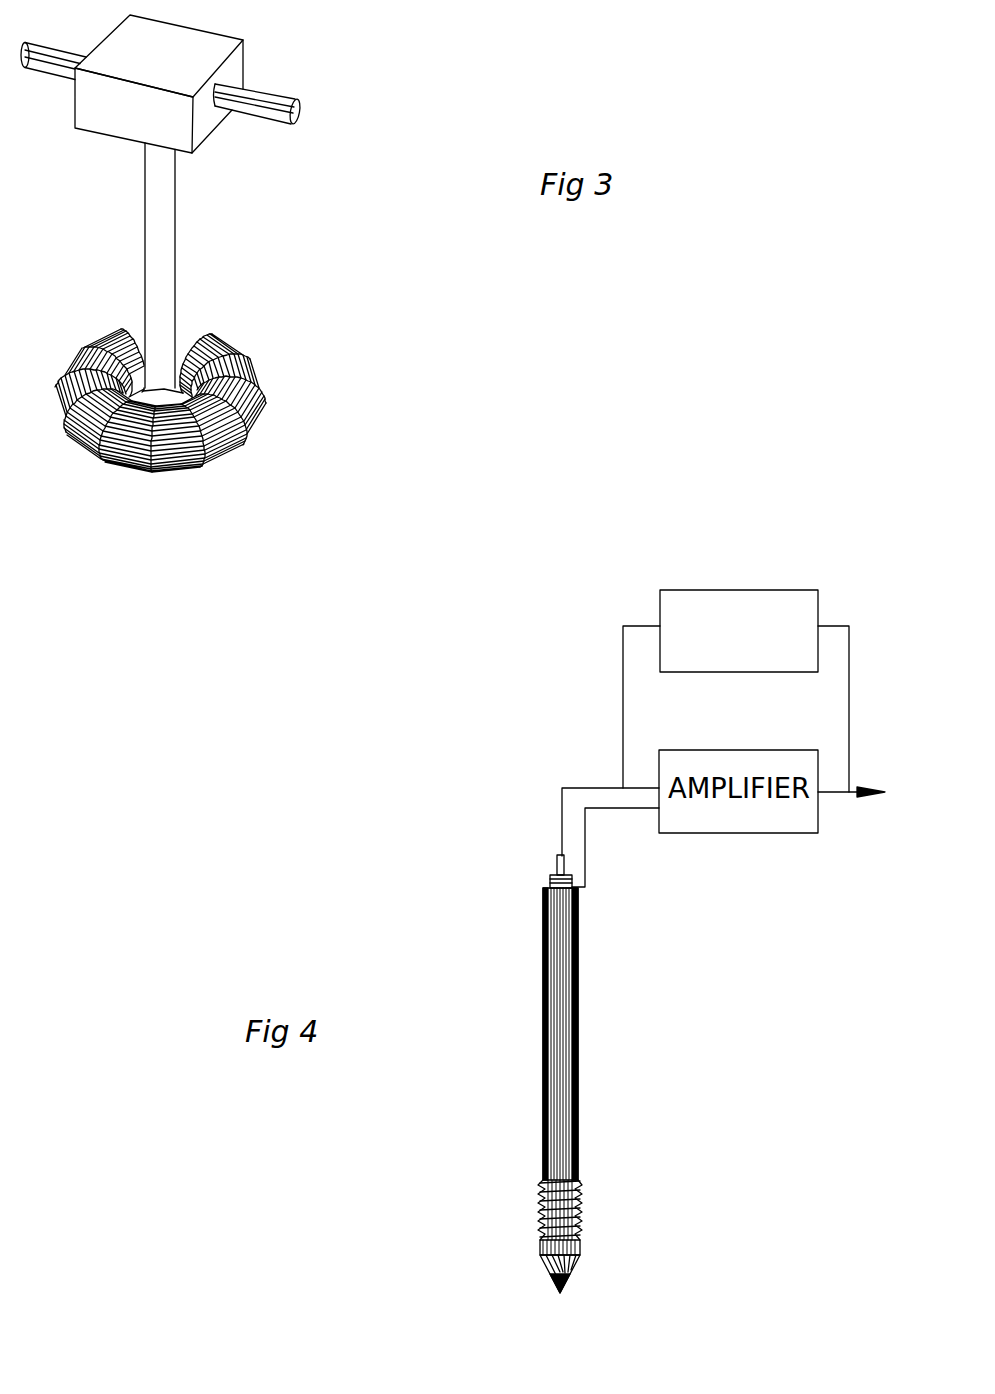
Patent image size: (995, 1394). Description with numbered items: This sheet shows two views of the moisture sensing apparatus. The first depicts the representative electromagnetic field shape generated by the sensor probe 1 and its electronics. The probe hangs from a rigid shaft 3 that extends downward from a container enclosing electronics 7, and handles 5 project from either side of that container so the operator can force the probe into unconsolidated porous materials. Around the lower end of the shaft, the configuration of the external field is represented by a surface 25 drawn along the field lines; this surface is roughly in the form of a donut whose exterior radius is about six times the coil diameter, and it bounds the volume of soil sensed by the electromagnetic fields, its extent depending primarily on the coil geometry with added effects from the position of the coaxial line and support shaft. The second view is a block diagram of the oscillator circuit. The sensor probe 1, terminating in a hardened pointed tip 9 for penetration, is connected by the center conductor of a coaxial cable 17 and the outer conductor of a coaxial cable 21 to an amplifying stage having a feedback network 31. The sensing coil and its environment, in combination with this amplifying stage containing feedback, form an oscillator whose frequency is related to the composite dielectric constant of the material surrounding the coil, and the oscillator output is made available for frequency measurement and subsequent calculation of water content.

In FIG. 4, the sensor probe 1 is at (600, 1182).
In FIG. 3, the rigid shaft 3 is at (192, 228).
In FIG. 4, the rigid shaft 3 is at (597, 947).
In FIG. 3, the handles 5 is at (312, 138).
In FIG. 3, the container enclosing electronics 7 is at (260, 57).
In FIG. 3, the hardened pointed tip 9 is at (175, 490).
In FIG. 4, the hardened pointed tip 9 is at (575, 1273).
In FIG. 4, the center conductor of a coaxial cable 17 is at (548, 827).
In FIG. 4, the outer conductor of a coaxial cable 21 is at (600, 830).
In FIG. 3, the surface tangent to the electromagnetic field configuration 25 is at (275, 378).
In FIG. 4, the feedback network 31 is at (770, 577).